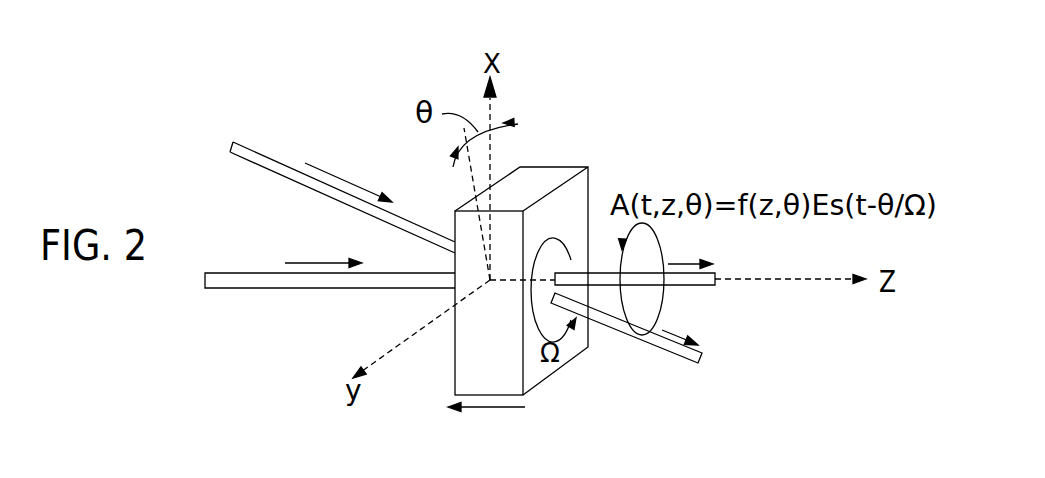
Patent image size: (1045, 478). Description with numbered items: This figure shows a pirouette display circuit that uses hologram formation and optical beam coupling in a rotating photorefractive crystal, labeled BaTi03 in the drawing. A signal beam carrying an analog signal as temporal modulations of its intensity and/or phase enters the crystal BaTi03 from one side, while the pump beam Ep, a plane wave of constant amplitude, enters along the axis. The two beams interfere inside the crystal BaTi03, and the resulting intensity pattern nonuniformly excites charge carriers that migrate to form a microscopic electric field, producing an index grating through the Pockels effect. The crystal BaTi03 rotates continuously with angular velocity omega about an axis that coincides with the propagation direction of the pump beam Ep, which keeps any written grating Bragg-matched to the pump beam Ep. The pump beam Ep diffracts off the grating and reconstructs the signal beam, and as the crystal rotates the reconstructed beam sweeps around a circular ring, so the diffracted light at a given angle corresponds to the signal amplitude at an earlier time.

The pump beam Ep is at (311, 278).
The barium titanate photorefractive crystal BaTi03 is at (532, 285).